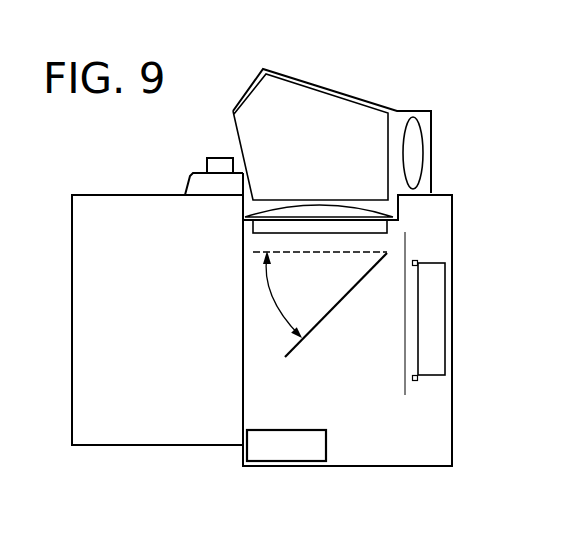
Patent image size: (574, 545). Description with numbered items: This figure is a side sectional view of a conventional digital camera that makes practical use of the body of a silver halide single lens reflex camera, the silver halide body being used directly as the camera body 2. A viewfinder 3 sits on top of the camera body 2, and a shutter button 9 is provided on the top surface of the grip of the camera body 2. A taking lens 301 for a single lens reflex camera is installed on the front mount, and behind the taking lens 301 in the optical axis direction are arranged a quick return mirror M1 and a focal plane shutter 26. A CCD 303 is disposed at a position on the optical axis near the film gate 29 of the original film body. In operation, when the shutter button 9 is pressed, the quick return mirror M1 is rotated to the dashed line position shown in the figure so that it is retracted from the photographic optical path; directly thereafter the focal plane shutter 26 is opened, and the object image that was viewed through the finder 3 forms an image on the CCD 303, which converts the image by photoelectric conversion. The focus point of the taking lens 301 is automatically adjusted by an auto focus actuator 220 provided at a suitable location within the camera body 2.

The camera body 2 is at (454, 210).
The viewfinder 3 is at (332, 91).
The shutter button 9 is at (221, 157).
The focal plane shutter 26 is at (405, 397).
The film gate 29 is at (416, 260).
The taking lens 301 is at (118, 194).
The CCD 303 is at (448, 318).
The auto focus actuator 220 is at (273, 462).
The quick return mirror M1 is at (338, 306).